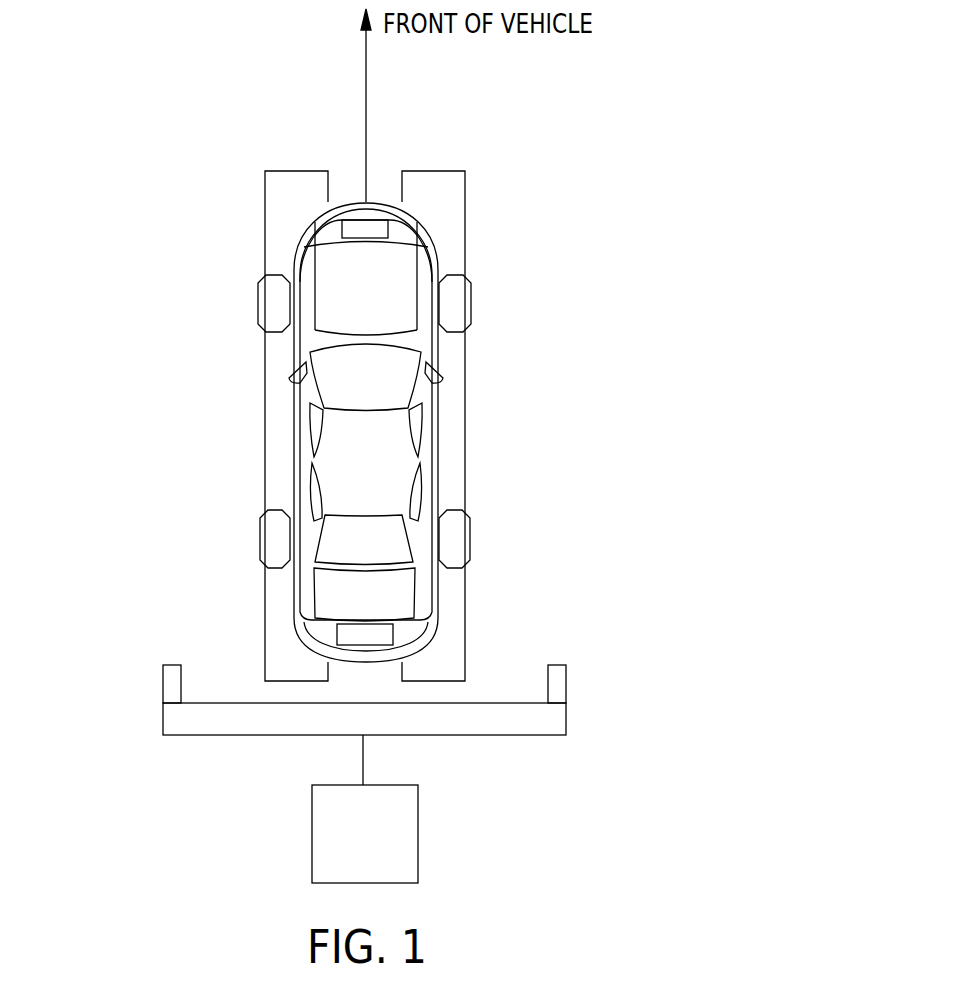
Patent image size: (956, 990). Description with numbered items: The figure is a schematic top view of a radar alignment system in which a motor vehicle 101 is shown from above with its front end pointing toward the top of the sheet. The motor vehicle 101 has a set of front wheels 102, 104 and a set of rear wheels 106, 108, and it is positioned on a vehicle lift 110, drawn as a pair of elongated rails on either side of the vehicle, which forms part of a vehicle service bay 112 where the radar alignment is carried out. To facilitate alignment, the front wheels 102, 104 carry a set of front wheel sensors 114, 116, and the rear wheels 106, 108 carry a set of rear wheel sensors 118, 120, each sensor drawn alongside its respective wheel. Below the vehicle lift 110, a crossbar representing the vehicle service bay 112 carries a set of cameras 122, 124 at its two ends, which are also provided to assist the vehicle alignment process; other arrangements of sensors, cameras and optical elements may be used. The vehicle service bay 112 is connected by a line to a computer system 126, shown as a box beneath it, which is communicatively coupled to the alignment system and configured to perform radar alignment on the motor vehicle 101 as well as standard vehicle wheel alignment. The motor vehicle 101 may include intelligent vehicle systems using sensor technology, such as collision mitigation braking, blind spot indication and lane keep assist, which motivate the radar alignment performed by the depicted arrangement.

The motor vehicle 101 is at (382, 472).
The front wheel 102 is at (244, 324).
The front wheel 104 is at (482, 329).
The rear wheel 106 is at (243, 559).
The rear wheel 108 is at (492, 569).
The vehicle lift 110 is at (440, 171).
The vehicle service bay 112 is at (566, 718).
The front wheel sensor 114 is at (270, 305).
The front wheel sensor 116 is at (462, 298).
The rear wheel sensor 118 is at (270, 537).
The rear wheel sensor 120 is at (457, 537).
The camera 122 is at (168, 685).
The camera 124 is at (557, 684).
The computer system 126 is at (382, 854).